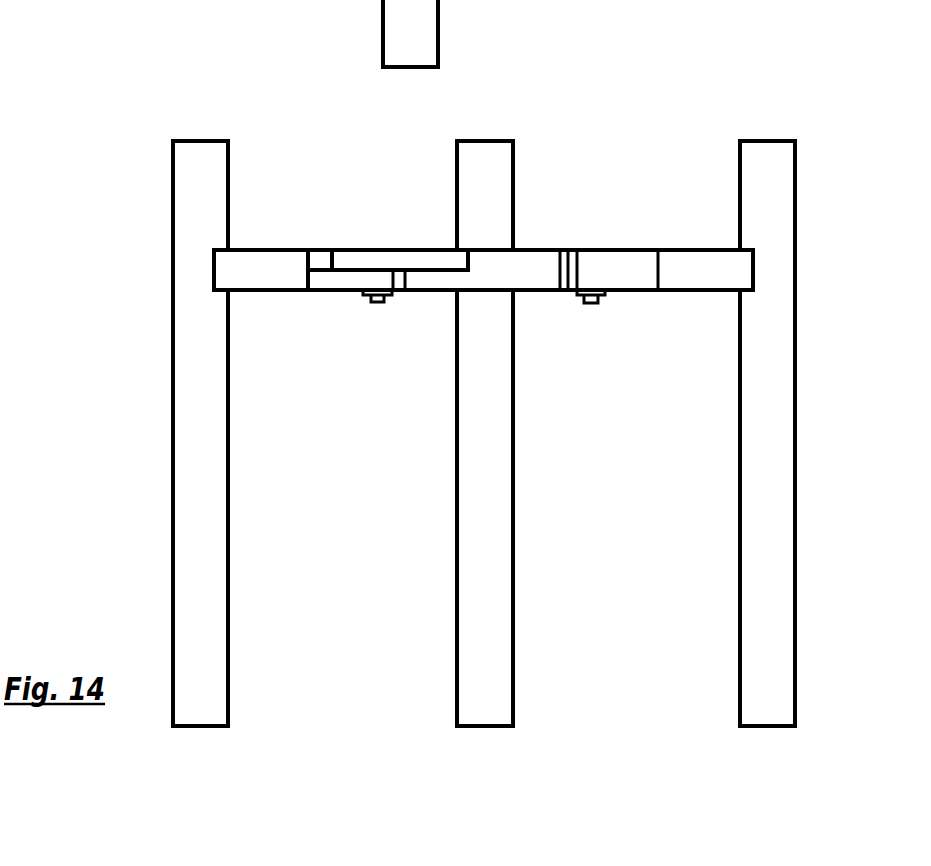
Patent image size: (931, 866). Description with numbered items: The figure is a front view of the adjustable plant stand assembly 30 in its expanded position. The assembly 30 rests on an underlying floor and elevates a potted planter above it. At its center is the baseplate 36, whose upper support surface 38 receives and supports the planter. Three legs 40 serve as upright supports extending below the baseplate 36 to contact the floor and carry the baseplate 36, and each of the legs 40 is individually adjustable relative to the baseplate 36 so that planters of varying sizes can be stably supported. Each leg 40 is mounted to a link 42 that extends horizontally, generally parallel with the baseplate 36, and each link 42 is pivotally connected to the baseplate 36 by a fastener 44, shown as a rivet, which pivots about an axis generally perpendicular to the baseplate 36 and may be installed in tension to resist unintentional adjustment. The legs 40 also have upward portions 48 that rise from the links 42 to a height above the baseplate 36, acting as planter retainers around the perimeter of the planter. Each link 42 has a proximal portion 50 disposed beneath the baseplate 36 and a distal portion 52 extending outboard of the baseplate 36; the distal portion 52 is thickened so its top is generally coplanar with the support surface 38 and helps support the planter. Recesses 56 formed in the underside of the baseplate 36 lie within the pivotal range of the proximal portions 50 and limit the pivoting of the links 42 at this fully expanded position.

The adjustable plant stand assembly 30 is at (588, 114).
The baseplate 36 is at (507, 271).
The upper support surface 38 is at (386, 247).
The legs 40 is at (212, 583).
The link 42 is at (240, 252).
The fastener 44 is at (365, 294).
The upward portions 48 is at (212, 172).
The proximal portion 50 is at (367, 282).
The distal portion 52 is at (265, 263).
The recesses 56 is at (345, 272).